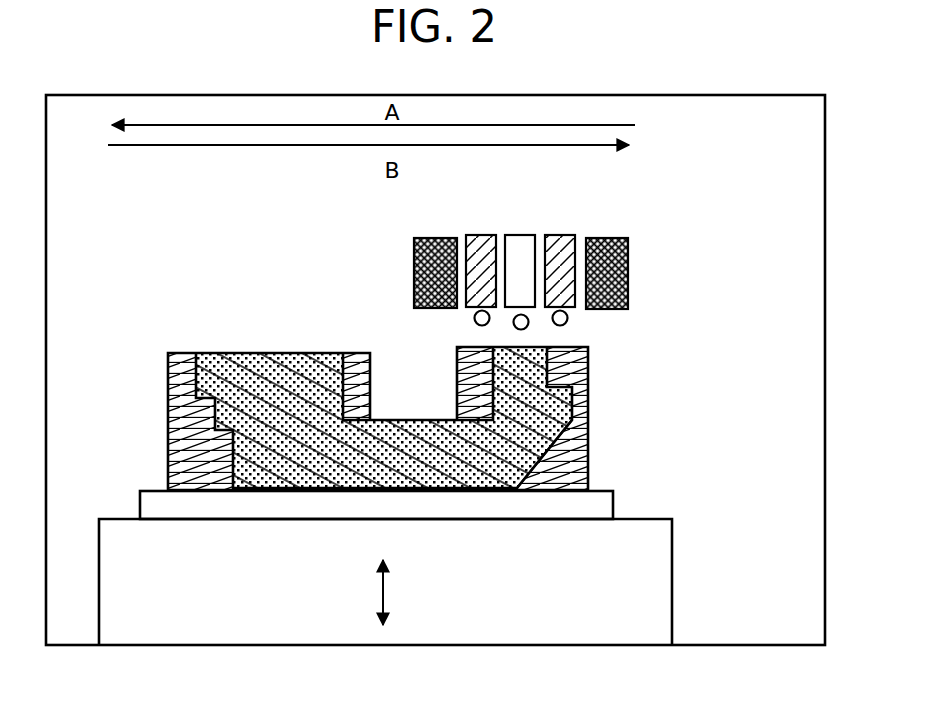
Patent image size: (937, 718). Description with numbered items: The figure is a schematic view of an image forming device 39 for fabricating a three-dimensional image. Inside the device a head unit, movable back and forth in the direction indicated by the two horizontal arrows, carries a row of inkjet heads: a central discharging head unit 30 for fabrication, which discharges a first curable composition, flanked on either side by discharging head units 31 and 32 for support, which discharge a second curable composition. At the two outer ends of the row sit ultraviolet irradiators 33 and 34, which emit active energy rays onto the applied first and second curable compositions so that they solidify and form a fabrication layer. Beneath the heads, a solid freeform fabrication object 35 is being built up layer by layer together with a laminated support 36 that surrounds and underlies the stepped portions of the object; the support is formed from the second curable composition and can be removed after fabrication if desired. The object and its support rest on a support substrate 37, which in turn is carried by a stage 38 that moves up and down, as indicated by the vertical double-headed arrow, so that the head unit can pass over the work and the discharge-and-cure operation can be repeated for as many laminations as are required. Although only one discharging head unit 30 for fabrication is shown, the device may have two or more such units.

The discharging head unit for fabrication 30 is at (518, 235).
The discharging head unit for support 31 is at (472, 235).
The discharging head unit for support 32 is at (560, 235).
The ultraviolet irradiator 33 is at (414, 268).
The ultraviolet irradiator 34 is at (628, 270).
The solid freeform fabrication object 35 is at (265, 353).
The laminated support 36 is at (588, 370).
The support substrate 37 is at (613, 504).
The stage 38 is at (672, 568).
The image forming device 39 is at (825, 140).